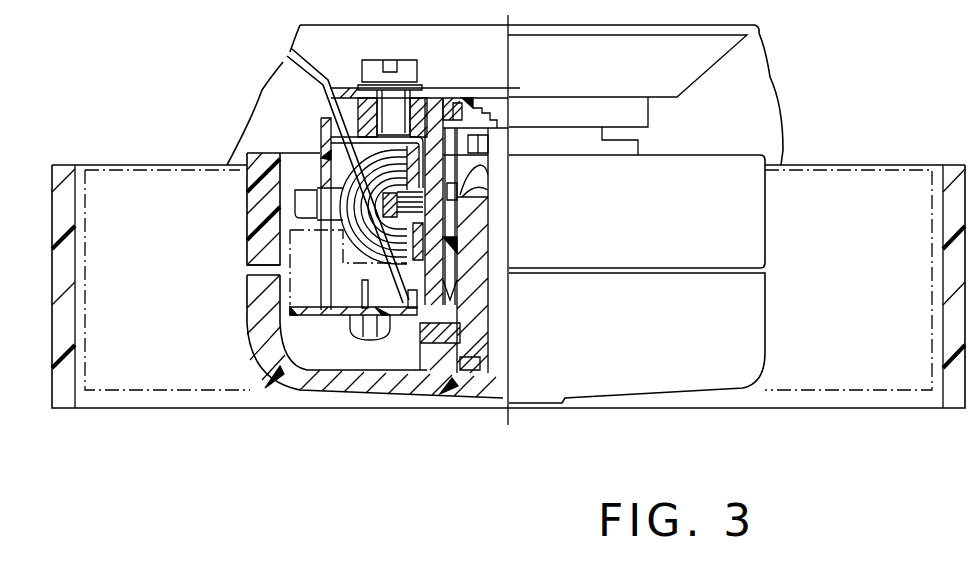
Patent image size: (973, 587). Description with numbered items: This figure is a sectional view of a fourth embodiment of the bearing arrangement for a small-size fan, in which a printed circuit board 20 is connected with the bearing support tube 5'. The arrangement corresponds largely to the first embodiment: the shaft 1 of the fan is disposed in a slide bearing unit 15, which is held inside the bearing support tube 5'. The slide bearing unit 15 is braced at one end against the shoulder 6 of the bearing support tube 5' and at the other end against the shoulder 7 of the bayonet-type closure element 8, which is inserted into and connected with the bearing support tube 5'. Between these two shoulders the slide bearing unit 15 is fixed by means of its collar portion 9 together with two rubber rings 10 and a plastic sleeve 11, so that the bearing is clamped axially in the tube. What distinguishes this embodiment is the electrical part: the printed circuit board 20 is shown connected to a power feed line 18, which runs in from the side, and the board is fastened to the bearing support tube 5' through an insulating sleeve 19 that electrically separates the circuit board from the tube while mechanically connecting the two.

The shaft 1 is at (495, 380).
The bearing support tube 5' is at (435, 379).
The shoulder of the bearing support tube 6 is at (489, 314).
The shoulder of the bayonet-type closure element 7 is at (428, 122).
The bayonet-type closure element 8 is at (495, 108).
The collar portion 9 is at (487, 182).
The rubber ring 10 is at (478, 207).
The plastic sleeve 11 is at (435, 300).
The slide bearing unit 15 is at (475, 280).
The power feed line 18 is at (322, 102).
The insulating sleeve 19 is at (408, 300).
The printed circuit board 20 is at (310, 312).